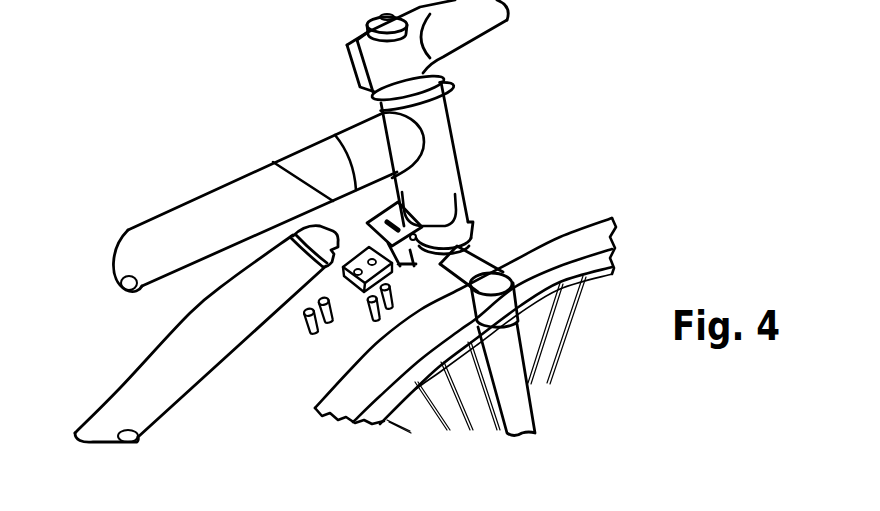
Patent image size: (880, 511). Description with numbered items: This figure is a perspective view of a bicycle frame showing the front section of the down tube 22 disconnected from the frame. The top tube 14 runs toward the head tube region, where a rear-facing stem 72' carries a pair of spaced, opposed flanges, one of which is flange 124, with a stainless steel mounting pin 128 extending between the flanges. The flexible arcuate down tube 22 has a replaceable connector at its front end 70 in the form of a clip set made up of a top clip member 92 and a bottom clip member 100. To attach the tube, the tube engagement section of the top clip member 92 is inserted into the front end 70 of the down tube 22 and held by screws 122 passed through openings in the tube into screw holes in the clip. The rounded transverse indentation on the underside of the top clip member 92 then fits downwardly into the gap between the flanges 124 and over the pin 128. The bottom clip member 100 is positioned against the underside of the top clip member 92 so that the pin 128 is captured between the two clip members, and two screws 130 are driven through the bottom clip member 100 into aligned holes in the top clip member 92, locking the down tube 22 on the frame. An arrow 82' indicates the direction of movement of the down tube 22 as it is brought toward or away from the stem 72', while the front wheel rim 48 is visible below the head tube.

The top tube 14 is at (207, 195).
The down tube 22 is at (205, 362).
The wheel rim 48 is at (599, 214).
The front end 70 is at (296, 303).
The head tube assembly 72' is at (470, 133).
The folding direction arrow 82' is at (81, 372).
The top clip member 92 is at (300, 229).
The bottom clip member 100 is at (336, 148).
The screws 122 is at (312, 333).
The flange 124 is at (470, 224).
The mounting pin 128 is at (390, 176).
The screws 130 is at (372, 318).